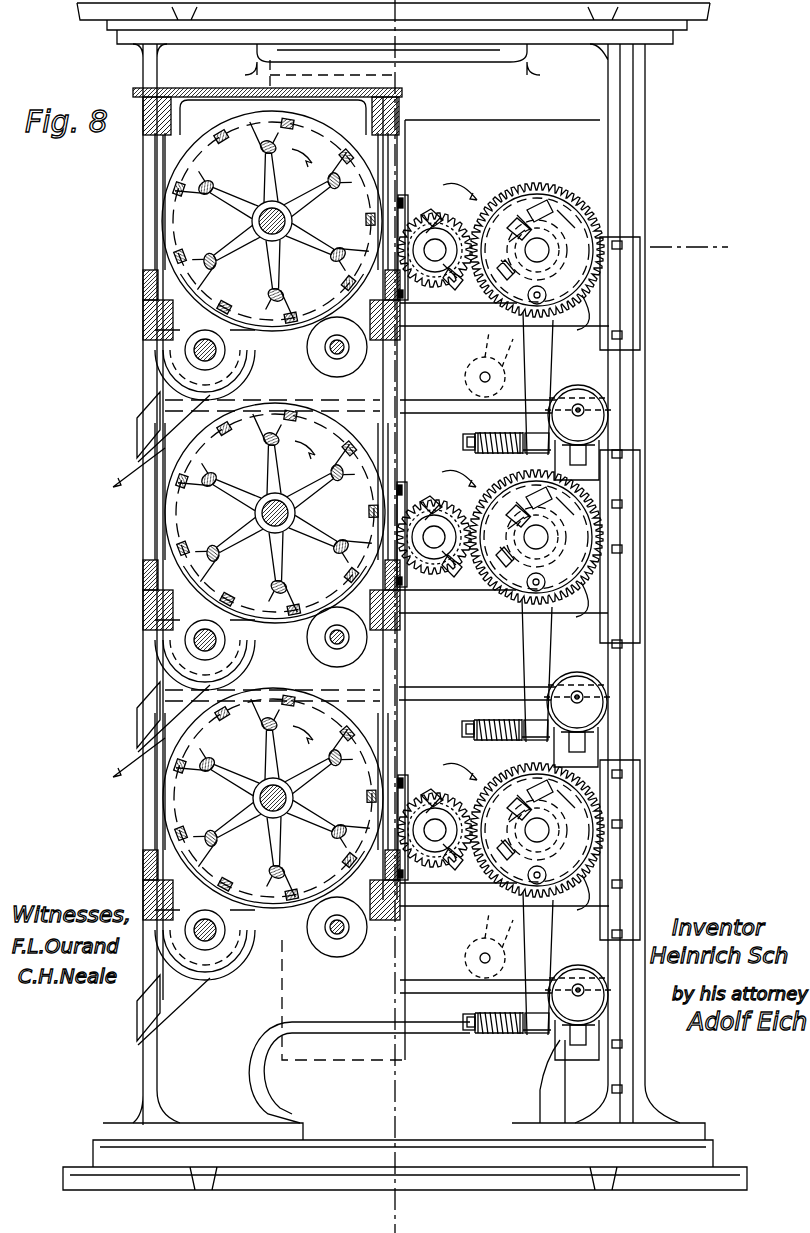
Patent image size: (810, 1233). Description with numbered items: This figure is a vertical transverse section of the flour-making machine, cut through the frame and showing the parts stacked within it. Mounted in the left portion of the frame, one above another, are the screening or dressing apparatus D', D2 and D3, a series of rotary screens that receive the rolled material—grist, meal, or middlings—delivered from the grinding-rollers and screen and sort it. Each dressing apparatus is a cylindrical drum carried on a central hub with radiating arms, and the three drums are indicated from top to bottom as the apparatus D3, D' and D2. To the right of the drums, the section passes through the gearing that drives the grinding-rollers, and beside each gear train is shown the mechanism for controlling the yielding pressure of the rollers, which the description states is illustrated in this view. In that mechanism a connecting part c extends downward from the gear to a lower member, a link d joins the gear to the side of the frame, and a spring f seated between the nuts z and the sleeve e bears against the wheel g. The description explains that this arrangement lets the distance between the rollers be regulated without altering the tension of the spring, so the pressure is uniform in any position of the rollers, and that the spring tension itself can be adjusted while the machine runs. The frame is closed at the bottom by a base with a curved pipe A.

The screening or dressing apparatus D3 is at (272, 218).
The screening or dressing apparatus D' is at (275, 510).
The screening or dressing apparatus D2 is at (273, 795).
The connecting rod c is at (538, 628).
The link d is at (583, 452).
The sleeve e is at (530, 432).
The spring f is at (495, 434).
The wheel g is at (576, 430).
The nut z is at (467, 436).
The frame pipe A is at (359, 1051).